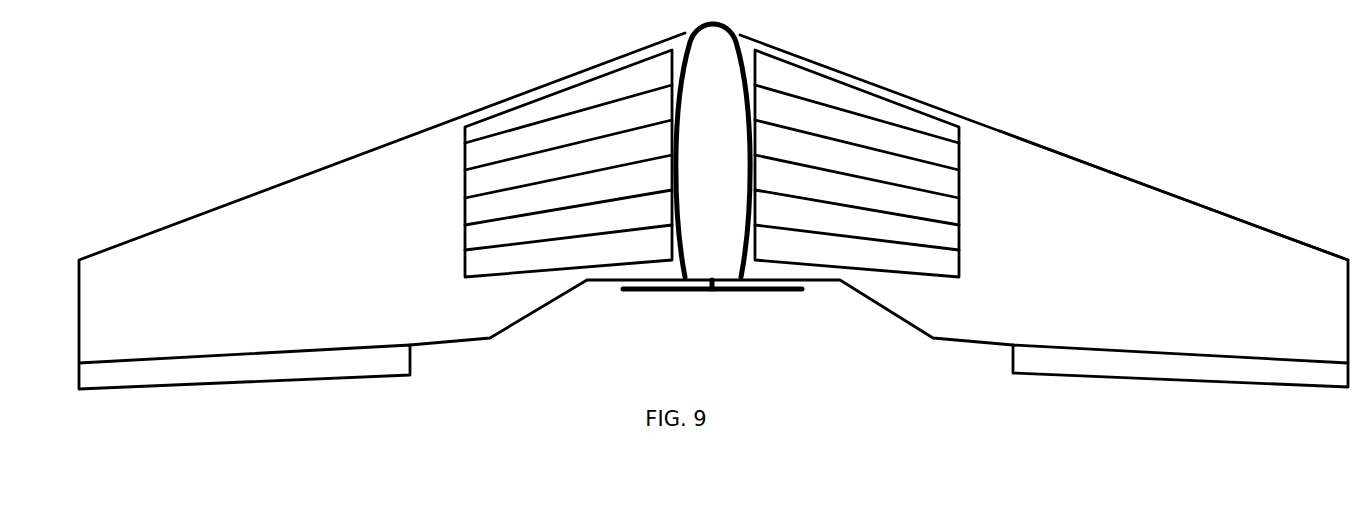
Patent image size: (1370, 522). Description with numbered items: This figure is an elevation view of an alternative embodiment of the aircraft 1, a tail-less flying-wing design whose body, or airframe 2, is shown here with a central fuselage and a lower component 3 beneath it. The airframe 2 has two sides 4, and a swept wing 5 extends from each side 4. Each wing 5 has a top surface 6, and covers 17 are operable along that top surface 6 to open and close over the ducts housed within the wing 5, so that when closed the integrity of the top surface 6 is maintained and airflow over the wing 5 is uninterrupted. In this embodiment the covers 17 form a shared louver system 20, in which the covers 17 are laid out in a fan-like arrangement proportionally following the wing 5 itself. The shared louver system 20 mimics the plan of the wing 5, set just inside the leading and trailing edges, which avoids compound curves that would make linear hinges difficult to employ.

The aircraft 1 is at (303, 212).
The airframe 2 is at (697, 52).
The landing skid bar 3 is at (748, 292).
The side 4 is at (1072, 190).
The wing 5 is at (1157, 222).
The top surface 6 is at (1283, 252).
The cover 17 is at (805, 88).
The shared louver system 20 is at (525, 145).